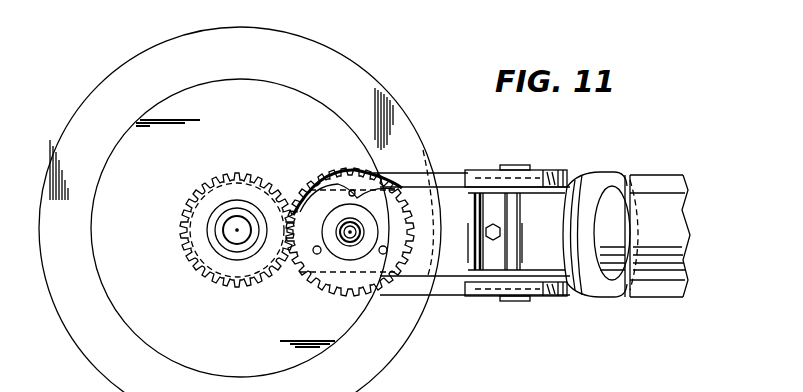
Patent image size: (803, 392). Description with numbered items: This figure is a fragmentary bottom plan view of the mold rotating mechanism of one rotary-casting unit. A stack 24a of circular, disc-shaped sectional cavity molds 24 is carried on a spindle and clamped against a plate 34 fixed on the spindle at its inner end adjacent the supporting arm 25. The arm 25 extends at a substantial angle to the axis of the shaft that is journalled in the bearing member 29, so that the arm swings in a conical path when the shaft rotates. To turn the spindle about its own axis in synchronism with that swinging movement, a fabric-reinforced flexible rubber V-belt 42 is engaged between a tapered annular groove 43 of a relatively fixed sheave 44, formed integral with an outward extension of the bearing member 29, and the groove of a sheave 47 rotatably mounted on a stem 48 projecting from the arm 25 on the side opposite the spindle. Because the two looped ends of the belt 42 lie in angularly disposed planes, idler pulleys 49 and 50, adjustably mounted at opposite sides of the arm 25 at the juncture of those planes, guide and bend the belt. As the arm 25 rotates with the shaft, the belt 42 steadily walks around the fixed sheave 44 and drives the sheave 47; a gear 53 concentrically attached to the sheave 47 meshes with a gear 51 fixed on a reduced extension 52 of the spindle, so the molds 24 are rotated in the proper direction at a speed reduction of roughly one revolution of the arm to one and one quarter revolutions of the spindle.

The sectional cavity mold 24 is at (322, 53).
The stack of molds 24a is at (356, 64).
The plate 34 is at (308, 106).
The gear 51 is at (248, 172).
The reduced extension of the spindle 52 is at (234, 231).
The stem 48 is at (307, 271).
The gear 53 is at (330, 277).
The sheave 47 is at (365, 171).
The arm 25 is at (427, 267).
The V-belt 42 is at (443, 168).
The idler pulley 50 is at (547, 170).
The idler pulley 49 is at (545, 298).
The tapered annular groove 43 is at (577, 255).
The fixed sheave 44 is at (607, 292).
The bearing member 29 is at (667, 196).